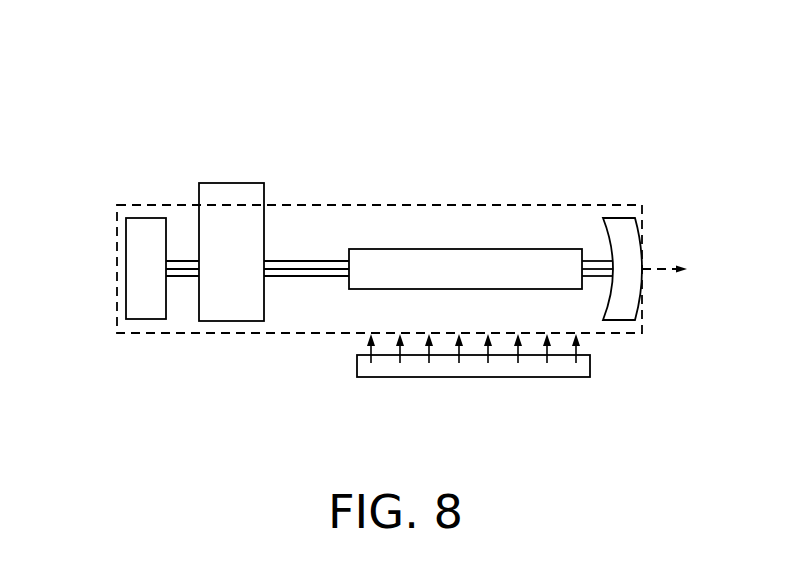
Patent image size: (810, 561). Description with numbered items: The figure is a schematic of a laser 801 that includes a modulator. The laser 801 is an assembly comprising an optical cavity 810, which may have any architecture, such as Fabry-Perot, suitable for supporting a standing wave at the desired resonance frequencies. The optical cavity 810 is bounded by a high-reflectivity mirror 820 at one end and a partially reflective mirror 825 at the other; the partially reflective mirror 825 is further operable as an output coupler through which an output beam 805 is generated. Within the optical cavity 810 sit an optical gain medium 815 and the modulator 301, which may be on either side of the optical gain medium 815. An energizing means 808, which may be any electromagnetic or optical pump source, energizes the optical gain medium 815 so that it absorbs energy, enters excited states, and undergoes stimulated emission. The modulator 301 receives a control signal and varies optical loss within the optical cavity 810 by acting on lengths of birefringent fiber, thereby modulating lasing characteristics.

The laser 801 is at (91, 97).
The optical cavity 810 is at (420, 207).
The high-reflectivity mirror 820 is at (141, 218).
The modulator 301 is at (253, 258).
The optical gain medium 815 is at (475, 253).
The partially reflective mirror 825 is at (613, 217).
The output beam 805 is at (668, 268).
The energizing means 808 is at (357, 364).